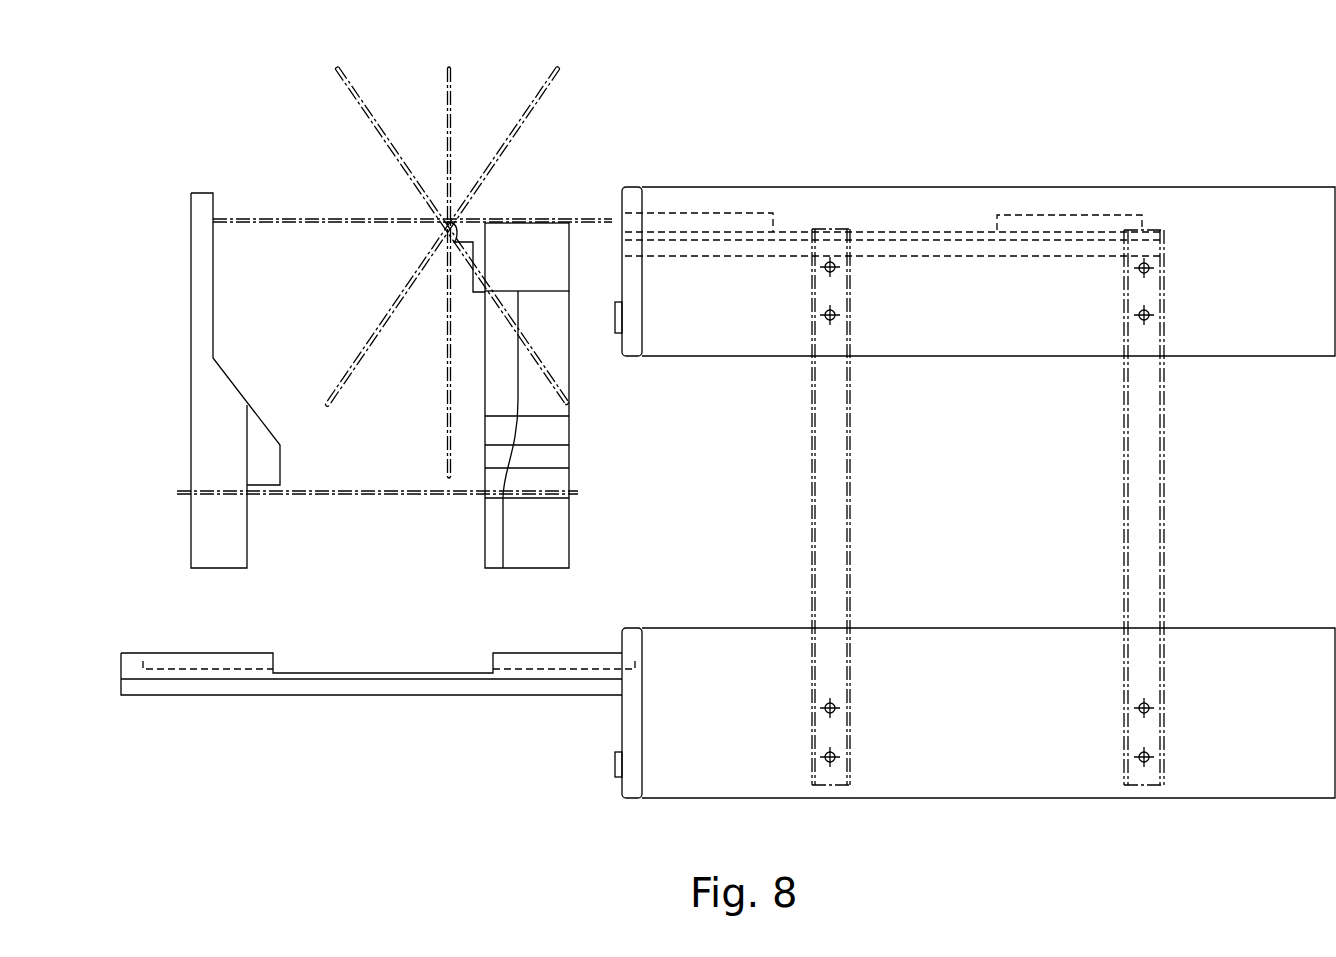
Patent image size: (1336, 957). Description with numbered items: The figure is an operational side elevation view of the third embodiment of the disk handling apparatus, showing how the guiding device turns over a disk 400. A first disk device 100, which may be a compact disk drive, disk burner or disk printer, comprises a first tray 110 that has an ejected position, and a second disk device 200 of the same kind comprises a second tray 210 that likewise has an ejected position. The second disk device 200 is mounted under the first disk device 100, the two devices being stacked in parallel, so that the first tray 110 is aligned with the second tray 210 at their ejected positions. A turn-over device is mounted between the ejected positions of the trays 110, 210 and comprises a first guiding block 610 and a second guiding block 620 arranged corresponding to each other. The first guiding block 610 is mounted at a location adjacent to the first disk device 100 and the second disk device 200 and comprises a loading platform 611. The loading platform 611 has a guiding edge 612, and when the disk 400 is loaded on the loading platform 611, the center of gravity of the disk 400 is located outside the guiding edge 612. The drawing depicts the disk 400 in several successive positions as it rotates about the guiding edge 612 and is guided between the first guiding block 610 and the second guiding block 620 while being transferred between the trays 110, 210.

The first disk device 100 is at (1278, 213).
The first tray 110 is at (930, 246).
The second disk device 200 is at (1257, 772).
The second tray 210 is at (515, 688).
The disk 400 is at (283, 212).
The first guiding block 610 is at (535, 541).
The loading platform 611 is at (553, 218).
The guiding edge 612 is at (446, 234).
The second guiding block 620 is at (198, 352).